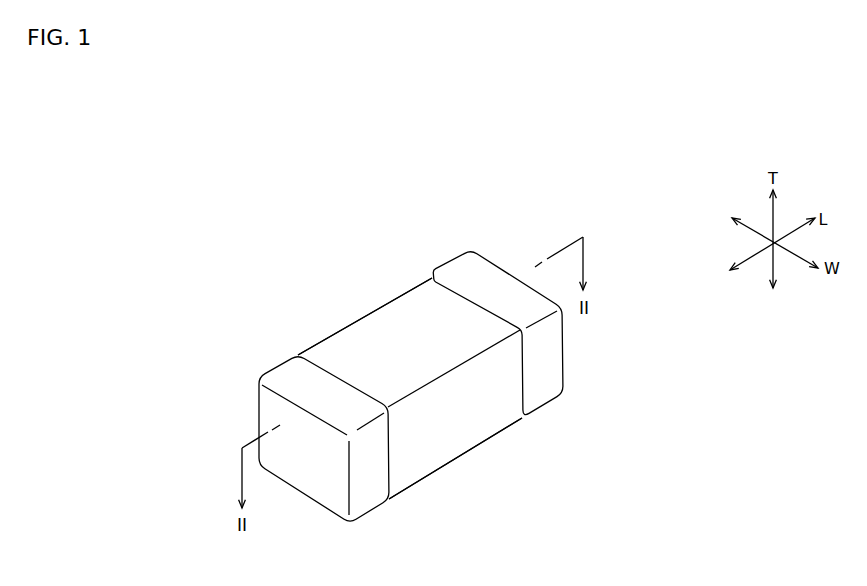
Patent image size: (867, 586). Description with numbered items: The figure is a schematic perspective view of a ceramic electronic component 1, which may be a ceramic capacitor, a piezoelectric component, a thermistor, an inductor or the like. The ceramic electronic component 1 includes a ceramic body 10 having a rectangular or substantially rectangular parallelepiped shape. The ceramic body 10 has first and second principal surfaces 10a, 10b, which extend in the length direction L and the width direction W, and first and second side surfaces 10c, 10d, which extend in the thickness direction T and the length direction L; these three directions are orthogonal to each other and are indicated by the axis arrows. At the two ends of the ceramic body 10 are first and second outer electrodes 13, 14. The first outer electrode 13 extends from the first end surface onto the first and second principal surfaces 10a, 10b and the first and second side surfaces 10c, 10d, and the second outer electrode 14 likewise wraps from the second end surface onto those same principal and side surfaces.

The ceramic electronic component 1 is at (509, 229).
The ceramic body 10 is at (400, 283).
The first principal surface 10a is at (393, 322).
The second principal surface 10b is at (443, 467).
The first side surface 10c is at (420, 287).
The second side surface 10d is at (410, 470).
The first outer electrode 13 is at (258, 407).
The second outer electrode 14 is at (565, 355).